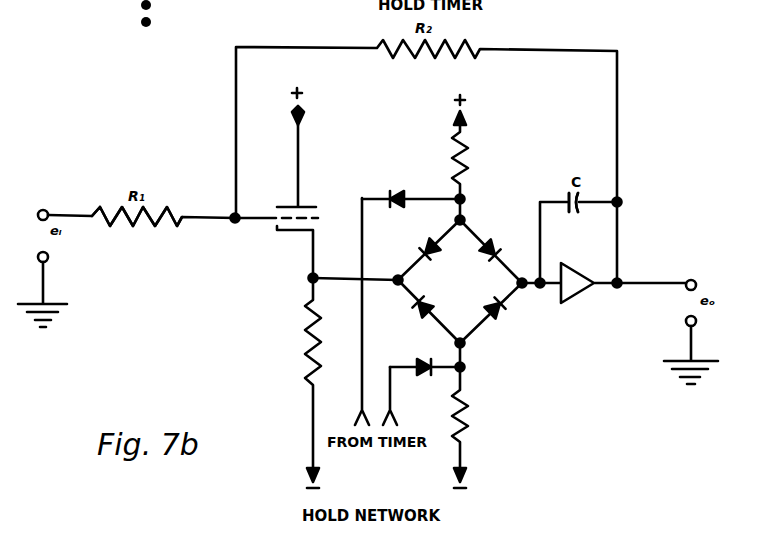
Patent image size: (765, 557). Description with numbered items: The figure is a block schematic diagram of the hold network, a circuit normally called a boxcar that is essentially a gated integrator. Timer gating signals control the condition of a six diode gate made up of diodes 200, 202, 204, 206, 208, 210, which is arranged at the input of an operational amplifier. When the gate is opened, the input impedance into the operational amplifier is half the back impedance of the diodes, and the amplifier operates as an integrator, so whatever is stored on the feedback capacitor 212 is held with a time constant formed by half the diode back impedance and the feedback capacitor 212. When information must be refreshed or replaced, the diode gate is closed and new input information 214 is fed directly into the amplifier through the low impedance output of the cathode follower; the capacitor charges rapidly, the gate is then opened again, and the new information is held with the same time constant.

The diode gate diode 200 is at (393, 196).
The diode gate diode 202 is at (489, 242).
The diode gate diode 204 is at (431, 240).
The diode gate diode 206 is at (419, 310).
The diode gate diode 208 is at (501, 316).
The diode gate diode 210 is at (424, 380).
The feedback capacitor 212 is at (573, 214).
The input information e1 214 is at (75, 217).